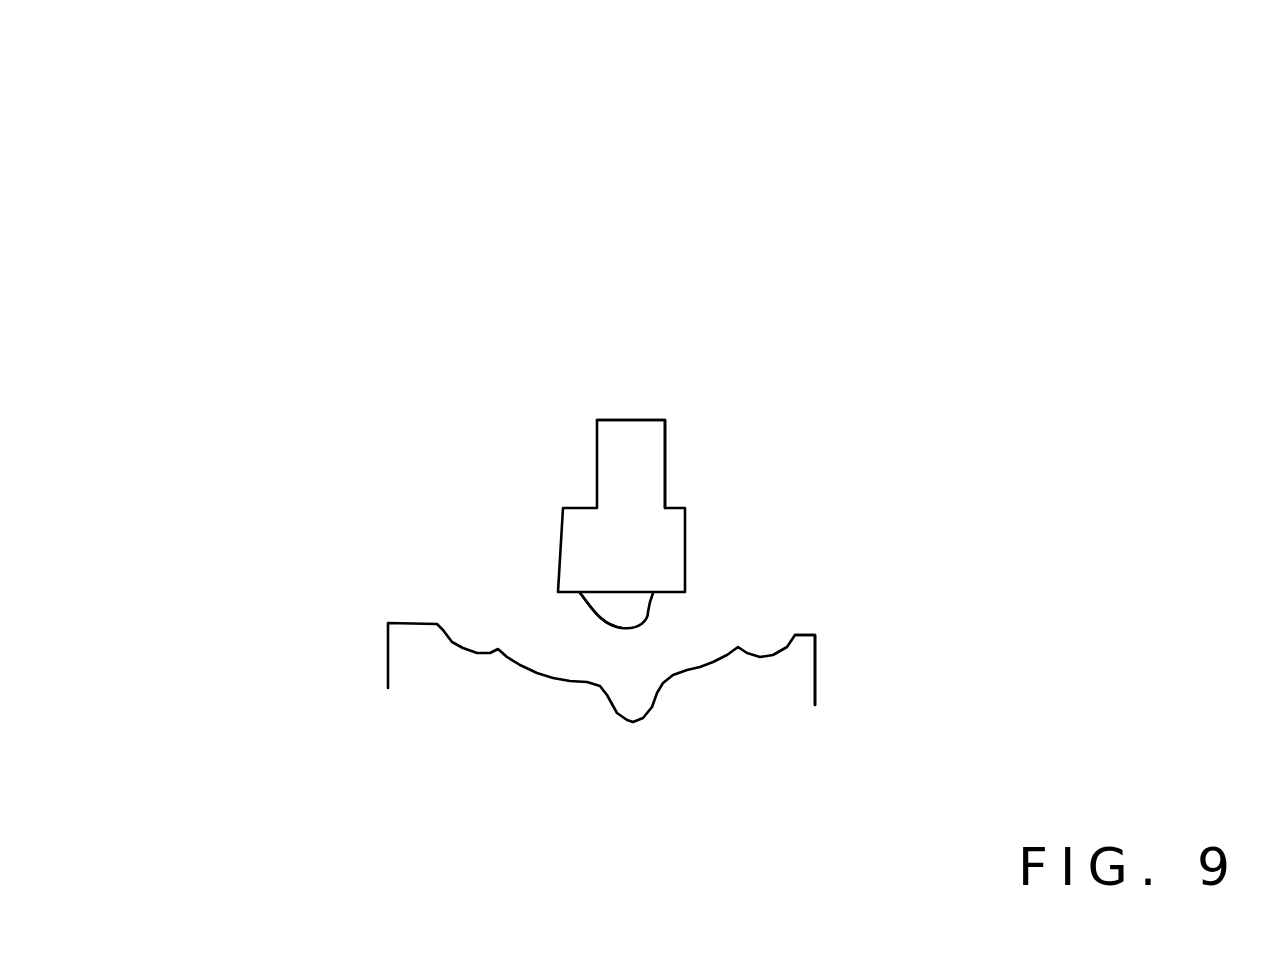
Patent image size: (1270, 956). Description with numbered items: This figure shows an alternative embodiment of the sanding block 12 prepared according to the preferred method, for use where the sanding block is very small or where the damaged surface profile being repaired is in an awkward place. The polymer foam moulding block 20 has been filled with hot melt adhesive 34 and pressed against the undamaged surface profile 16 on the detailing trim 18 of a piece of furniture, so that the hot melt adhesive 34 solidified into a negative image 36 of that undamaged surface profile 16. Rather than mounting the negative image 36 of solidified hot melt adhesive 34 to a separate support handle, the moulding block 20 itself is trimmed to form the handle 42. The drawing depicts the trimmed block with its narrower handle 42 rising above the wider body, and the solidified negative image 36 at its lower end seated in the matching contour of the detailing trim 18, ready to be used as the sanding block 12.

The sanding block 12 is at (338, 235).
The undamaged surface profile 16 is at (497, 620).
The detailing trim 18 is at (815, 680).
The polymer foam moulding block 20 is at (662, 557).
The hot melt adhesive 34 is at (612, 605).
The negative image 36 is at (646, 648).
The handle 42 is at (645, 457).